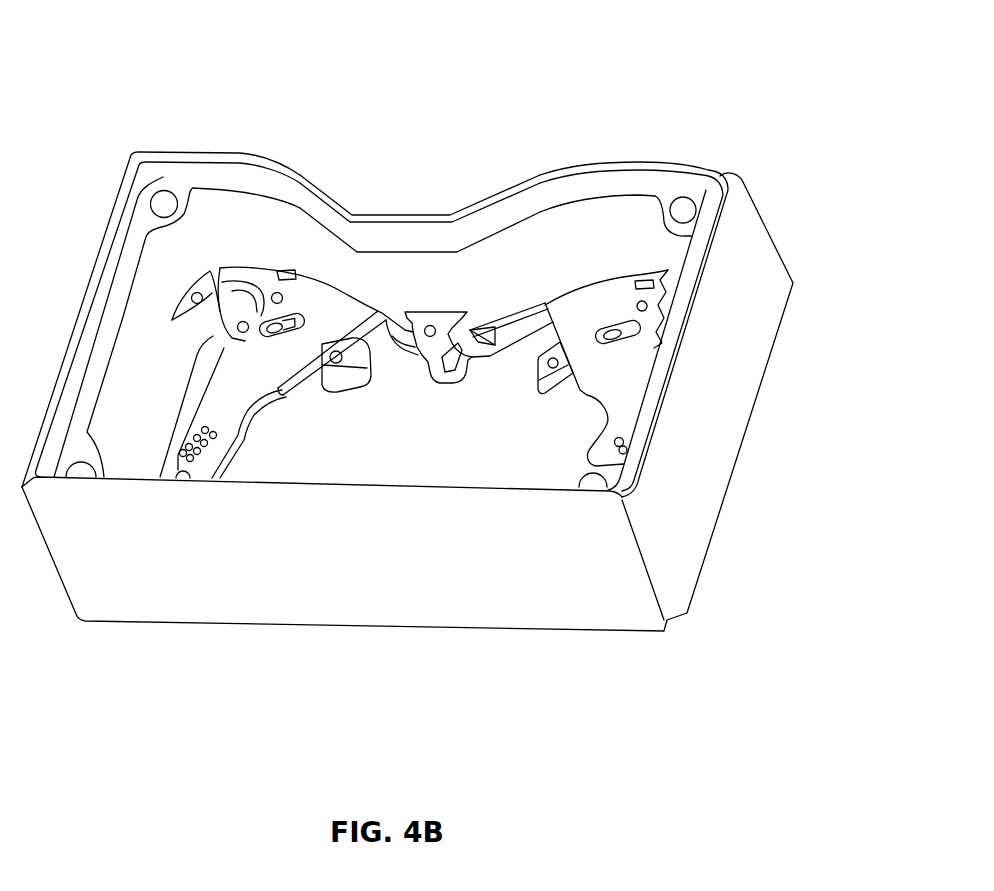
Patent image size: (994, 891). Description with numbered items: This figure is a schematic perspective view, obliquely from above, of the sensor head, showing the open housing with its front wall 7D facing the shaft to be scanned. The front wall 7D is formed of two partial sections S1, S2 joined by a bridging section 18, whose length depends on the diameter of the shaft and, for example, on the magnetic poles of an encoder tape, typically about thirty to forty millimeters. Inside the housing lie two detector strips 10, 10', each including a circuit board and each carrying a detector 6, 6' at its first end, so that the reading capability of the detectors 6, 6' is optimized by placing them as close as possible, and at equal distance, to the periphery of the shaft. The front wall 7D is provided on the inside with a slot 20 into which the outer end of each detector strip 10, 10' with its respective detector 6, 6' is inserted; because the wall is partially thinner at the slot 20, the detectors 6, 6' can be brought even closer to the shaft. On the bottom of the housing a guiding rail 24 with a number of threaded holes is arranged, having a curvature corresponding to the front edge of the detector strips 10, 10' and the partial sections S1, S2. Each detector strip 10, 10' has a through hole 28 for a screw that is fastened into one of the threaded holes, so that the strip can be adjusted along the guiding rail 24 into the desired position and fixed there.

The partial section S1 is at (249, 120).
The partial section S2 is at (634, 130).
The front wall 7D is at (688, 163).
The bridging section 18 is at (391, 216).
The detector 6 is at (689, 338).
The detector 6' is at (315, 227).
The detector strip 10 is at (587, 368).
The detector strip 10' is at (223, 374).
The slot 20 is at (377, 325).
The guiding rail 24 is at (332, 384).
The through hole 28 is at (295, 318).